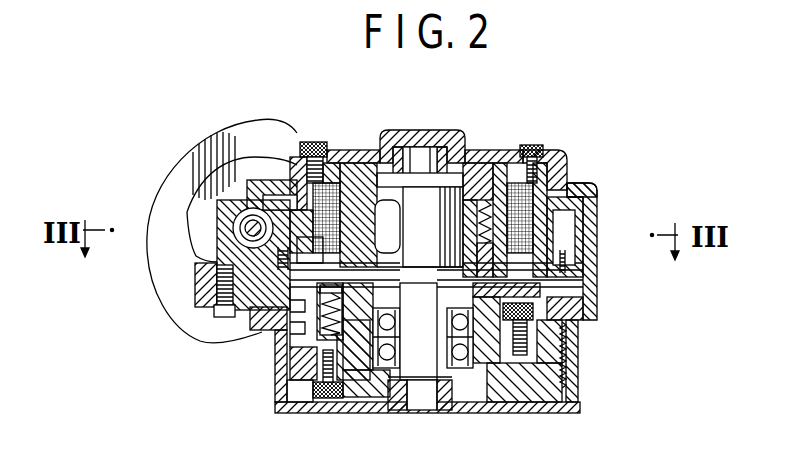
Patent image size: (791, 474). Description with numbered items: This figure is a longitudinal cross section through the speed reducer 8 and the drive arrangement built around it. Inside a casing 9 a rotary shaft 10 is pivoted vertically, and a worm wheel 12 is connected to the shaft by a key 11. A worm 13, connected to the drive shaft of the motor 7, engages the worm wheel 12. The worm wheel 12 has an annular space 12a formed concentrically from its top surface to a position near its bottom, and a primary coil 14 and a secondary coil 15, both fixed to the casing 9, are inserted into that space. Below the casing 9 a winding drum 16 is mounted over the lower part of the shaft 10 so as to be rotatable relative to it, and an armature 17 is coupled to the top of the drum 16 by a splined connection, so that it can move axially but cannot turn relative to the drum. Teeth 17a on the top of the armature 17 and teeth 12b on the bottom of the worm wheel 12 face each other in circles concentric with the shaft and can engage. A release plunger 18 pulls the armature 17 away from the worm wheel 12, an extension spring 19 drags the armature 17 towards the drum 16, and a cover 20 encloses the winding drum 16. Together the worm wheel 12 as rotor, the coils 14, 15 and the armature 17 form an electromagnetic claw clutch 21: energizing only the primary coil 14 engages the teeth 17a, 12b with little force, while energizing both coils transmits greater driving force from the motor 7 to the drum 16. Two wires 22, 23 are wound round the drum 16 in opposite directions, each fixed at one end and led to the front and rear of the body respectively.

The motor 7 is at (260, 120).
The reducer 8 is at (447, 140).
The casing 9 is at (453, 131).
The rotary shaft 10 is at (407, 190).
The key 11 is at (373, 212).
The worm wheel 12 is at (580, 205).
The annular space 12a is at (556, 189).
The teeth 12b is at (583, 286).
The worm 13 is at (240, 228).
The primary coil 14 is at (519, 181).
The secondary coil 15 is at (565, 232).
The winding drum 16 is at (532, 398).
The armature 17 is at (593, 313).
The teeth 17a is at (436, 283).
The release plunger 18 is at (457, 253).
The extension spring 19 is at (268, 330).
The cover 20 is at (307, 411).
The electromagnetic claw clutch 21 is at (210, 186).
The wire 22 is at (562, 343).
The wire 23 is at (568, 385).